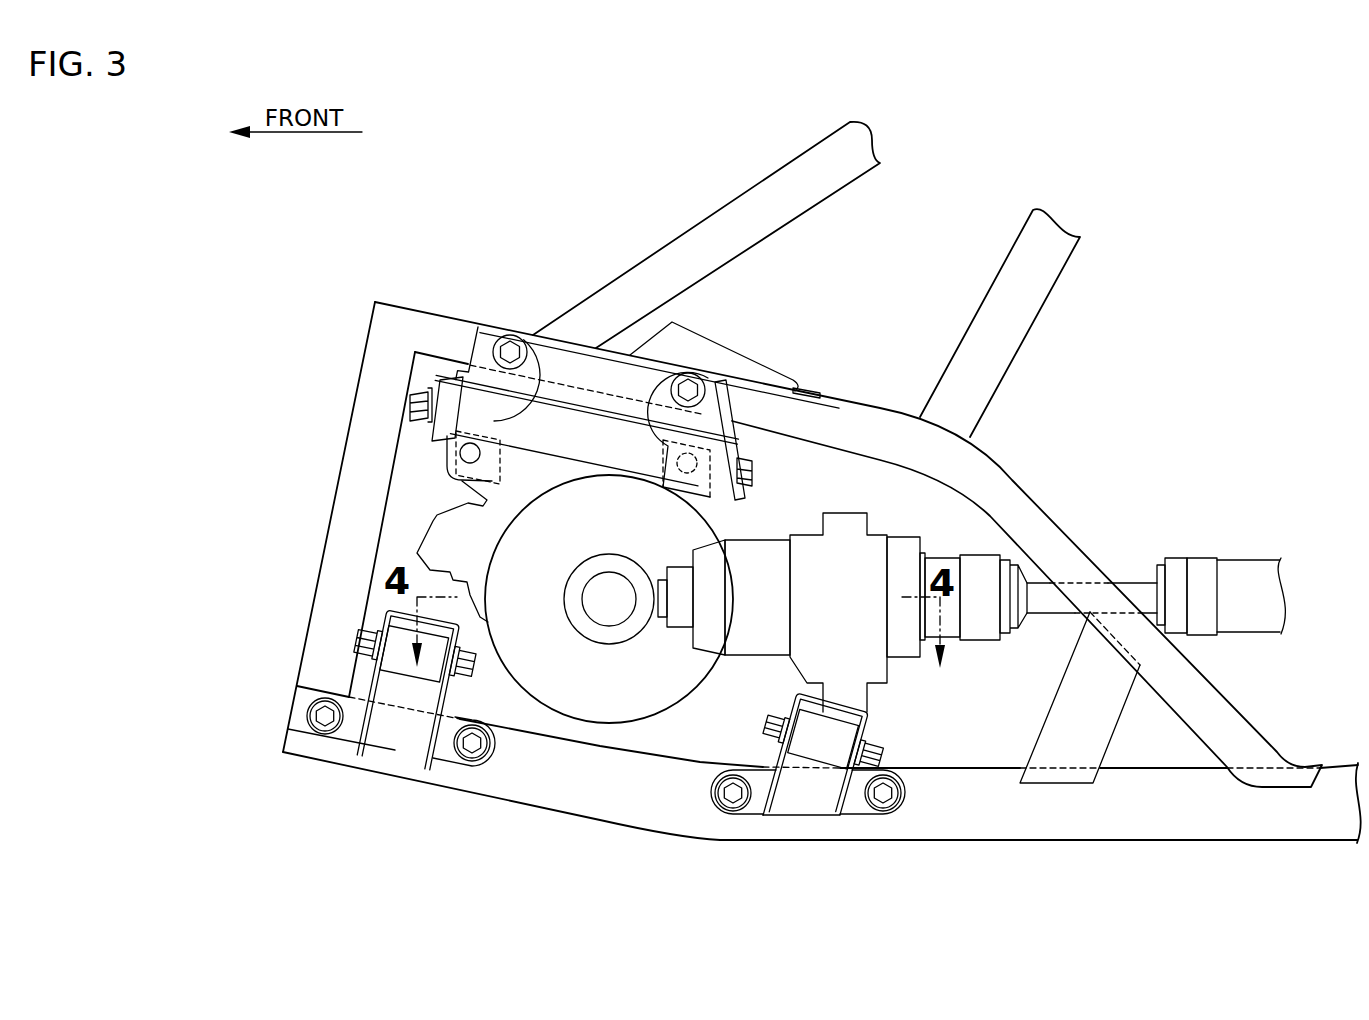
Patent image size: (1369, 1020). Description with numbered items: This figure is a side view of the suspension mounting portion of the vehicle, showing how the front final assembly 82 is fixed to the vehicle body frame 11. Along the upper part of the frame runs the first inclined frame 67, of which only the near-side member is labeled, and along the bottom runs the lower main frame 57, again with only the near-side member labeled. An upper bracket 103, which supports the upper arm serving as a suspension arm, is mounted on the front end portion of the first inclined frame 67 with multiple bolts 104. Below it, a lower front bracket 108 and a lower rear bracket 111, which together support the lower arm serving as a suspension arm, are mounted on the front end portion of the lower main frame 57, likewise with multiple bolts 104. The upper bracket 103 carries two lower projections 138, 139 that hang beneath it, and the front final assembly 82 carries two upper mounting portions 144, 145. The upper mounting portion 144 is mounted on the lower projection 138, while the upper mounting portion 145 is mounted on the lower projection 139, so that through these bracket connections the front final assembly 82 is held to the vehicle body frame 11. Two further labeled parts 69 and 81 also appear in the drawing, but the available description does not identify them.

The vehicle body frame 11 is at (1038, 485).
The lower main frame 57 is at (550, 797).
The first inclined frame 67 is at (872, 417).
The front frame member 69 is at (323, 553).
The drive shaft 81 is at (1128, 590).
The front final assembly 82 is at (853, 502).
The upper bracket 103 is at (585, 363).
The bolt 104 is at (533, 343).
The lower front bracket 108 is at (397, 737).
The lower rear bracket 111 is at (807, 797).
The lower projection 138 is at (540, 378).
The lower projection 139 is at (701, 348).
The upper mounting portion 144 is at (467, 488).
The upper mounting portion 145 is at (800, 383).